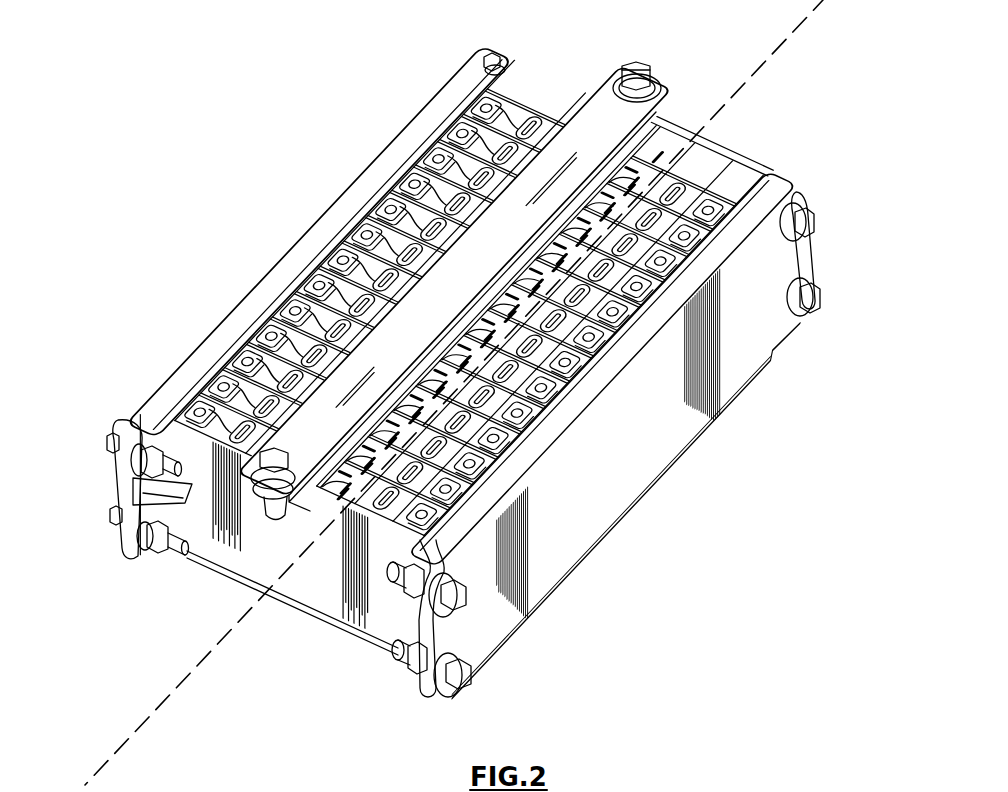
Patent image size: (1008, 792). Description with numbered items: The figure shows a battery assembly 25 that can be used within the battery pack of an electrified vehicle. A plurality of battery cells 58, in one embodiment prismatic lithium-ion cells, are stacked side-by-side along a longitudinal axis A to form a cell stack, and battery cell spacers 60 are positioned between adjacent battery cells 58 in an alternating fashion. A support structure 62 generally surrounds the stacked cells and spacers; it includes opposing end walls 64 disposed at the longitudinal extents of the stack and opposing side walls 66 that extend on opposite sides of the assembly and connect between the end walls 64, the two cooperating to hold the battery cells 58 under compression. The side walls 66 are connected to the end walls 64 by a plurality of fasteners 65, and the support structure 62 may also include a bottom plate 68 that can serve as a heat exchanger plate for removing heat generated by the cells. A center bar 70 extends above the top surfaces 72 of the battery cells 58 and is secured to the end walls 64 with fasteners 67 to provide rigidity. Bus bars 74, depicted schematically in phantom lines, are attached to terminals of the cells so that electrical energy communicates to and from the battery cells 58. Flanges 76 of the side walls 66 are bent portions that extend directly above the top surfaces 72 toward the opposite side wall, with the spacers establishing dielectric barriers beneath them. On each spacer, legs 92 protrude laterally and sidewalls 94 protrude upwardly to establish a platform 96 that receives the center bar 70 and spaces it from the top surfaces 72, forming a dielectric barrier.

The battery assembly 25 is at (506, 369).
The battery cells 58 is at (537, 103).
The battery cell spacers 60 is at (447, 168).
The support structure 62 is at (336, 258).
The end walls 64 is at (692, 178).
The fasteners 65 is at (487, 67).
The side walls 66 is at (130, 486).
The fasteners 67 is at (631, 66).
The bottom plate 68 is at (357, 632).
The center bar 70 is at (604, 115).
The top surfaces 72 is at (345, 265).
The bus bars 74 is at (530, 397).
The flanges 76 is at (211, 343).
The legs 92 is at (626, 180).
The sidewalls 94 is at (621, 170).
The platform 96 is at (566, 221).
The longitudinal axis A is at (158, 703).